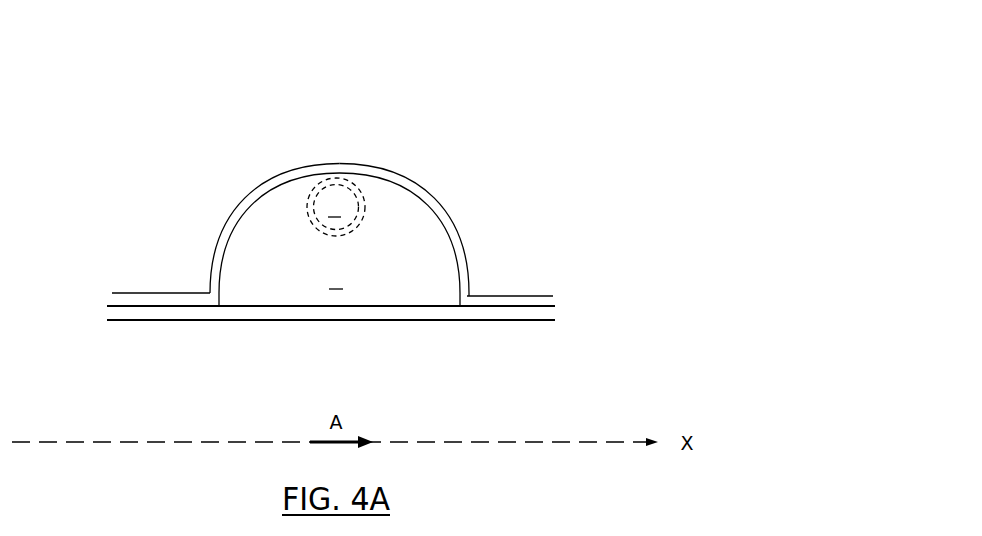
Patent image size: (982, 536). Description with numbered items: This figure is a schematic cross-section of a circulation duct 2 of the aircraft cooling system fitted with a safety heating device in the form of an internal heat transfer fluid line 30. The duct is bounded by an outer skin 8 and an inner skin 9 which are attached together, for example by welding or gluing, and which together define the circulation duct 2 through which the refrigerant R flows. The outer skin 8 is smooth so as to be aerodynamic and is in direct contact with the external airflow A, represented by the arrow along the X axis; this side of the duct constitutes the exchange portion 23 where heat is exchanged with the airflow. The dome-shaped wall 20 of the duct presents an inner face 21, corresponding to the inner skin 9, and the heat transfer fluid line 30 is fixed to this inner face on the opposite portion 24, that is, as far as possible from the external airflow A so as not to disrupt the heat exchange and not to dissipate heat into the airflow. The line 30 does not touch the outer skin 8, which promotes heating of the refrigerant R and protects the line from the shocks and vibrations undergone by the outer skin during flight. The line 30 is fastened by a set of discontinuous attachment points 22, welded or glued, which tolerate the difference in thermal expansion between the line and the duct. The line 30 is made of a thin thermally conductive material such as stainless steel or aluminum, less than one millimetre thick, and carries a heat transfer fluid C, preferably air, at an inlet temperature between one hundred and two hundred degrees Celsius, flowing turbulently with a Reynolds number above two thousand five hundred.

The circulation duct 2 is at (97, 98).
The outer skin 8 is at (513, 322).
The inner skin 9 is at (530, 295).
The wall 20 is at (240, 193).
The inner face 21 is at (235, 228).
The attachment points 22 is at (333, 176).
The exchange portion 23 is at (395, 322).
The opposite portion 24 is at (397, 176).
The heat transfer fluid line 30 is at (315, 190).